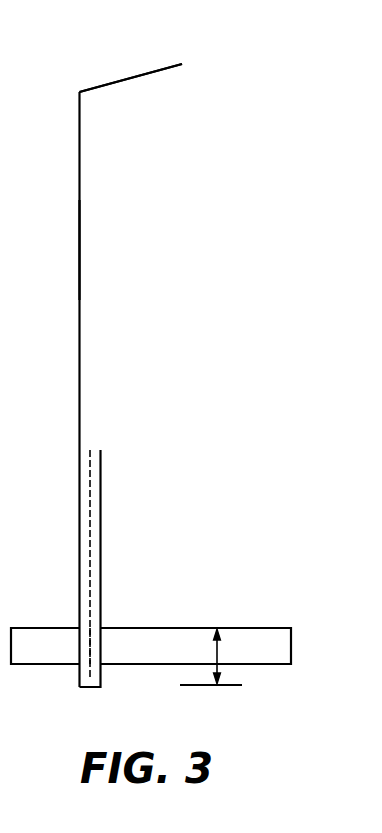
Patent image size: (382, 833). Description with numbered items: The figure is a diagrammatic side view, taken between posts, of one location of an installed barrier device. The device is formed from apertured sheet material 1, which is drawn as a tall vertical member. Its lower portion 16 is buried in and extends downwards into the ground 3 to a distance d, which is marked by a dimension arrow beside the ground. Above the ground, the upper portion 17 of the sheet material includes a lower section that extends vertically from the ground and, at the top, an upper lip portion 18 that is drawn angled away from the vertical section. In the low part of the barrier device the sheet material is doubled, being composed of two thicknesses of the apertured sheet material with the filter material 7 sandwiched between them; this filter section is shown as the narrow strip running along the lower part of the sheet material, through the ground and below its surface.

The apertured sheet material 1 is at (117, 341).
The upper lip portion 18 is at (152, 73).
The upper portion 17 is at (80, 238).
The filter material 7 is at (90, 493).
The ground 3 is at (257, 628).
The lower portion 16 is at (89, 652).
The distance d is at (213, 653).